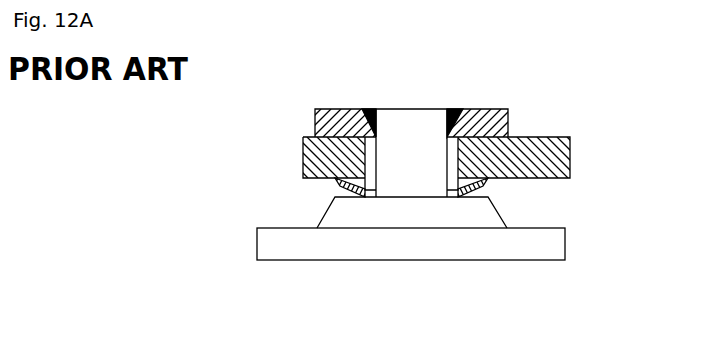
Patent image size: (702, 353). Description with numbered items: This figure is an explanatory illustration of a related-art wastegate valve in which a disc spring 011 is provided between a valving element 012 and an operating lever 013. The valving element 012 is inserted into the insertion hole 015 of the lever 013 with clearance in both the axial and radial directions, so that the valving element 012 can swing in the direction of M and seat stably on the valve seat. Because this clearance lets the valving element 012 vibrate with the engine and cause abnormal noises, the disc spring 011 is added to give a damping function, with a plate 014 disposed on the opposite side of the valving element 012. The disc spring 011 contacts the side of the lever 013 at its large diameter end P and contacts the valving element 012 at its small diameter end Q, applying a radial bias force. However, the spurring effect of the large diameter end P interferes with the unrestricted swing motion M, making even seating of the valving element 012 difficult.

The disc spring 011 is at (335, 186).
The valving element 012 is at (549, 252).
The lever 013 is at (555, 138).
The plate 014 is at (342, 108).
The insertion hole 015 is at (447, 153).
The large diameter end P is at (499, 191).
The small diameter end Q is at (469, 210).
The swing motion direction M is at (466, 296).